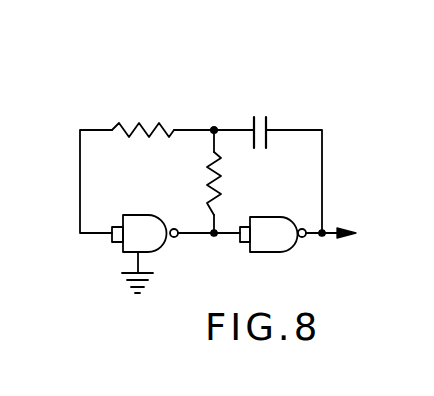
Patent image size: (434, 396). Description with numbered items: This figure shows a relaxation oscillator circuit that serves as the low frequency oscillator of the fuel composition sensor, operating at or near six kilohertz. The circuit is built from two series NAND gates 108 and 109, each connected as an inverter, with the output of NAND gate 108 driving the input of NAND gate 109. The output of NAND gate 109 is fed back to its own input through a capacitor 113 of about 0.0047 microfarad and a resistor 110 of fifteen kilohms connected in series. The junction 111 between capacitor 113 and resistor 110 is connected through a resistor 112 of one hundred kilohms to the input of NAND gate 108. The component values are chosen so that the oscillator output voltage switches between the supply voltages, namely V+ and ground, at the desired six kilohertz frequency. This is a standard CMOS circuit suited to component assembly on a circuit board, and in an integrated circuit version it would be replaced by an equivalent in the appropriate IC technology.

The NAND gate 108 is at (143, 240).
The NAND gate 109 is at (272, 242).
The resistor 110 is at (208, 173).
The junction 111 is at (214, 128).
The resistor 112 is at (140, 122).
The capacitor 113 is at (265, 122).